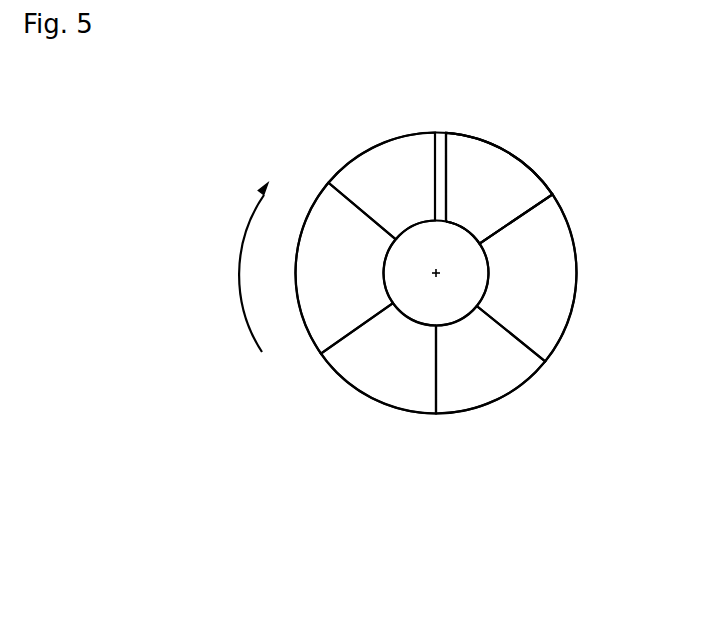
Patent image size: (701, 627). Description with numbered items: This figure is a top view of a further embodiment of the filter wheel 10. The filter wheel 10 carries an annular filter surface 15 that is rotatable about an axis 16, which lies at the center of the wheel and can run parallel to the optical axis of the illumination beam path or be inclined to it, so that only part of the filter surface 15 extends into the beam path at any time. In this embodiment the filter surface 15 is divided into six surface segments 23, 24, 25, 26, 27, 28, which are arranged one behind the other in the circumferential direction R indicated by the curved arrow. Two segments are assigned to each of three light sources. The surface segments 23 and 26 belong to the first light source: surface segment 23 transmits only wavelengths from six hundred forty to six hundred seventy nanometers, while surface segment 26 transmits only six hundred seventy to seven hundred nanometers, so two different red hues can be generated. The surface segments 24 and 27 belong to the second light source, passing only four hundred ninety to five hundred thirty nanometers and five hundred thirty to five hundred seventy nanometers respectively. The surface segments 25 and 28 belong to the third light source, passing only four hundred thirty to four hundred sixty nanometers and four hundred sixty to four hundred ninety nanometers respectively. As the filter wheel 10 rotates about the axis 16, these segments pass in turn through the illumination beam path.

The filter wheel 10 is at (538, 173).
The filter surface 15 is at (478, 157).
The axis 16 is at (437, 272).
The surface segment 23 is at (346, 268).
The surface segment 24 is at (378, 358).
The surface segment 25 is at (490, 360).
The surface segment 26 is at (527, 277).
The surface segment 27 is at (499, 188).
The surface segment 28 is at (381, 186).
The circumferential direction R is at (237, 264).